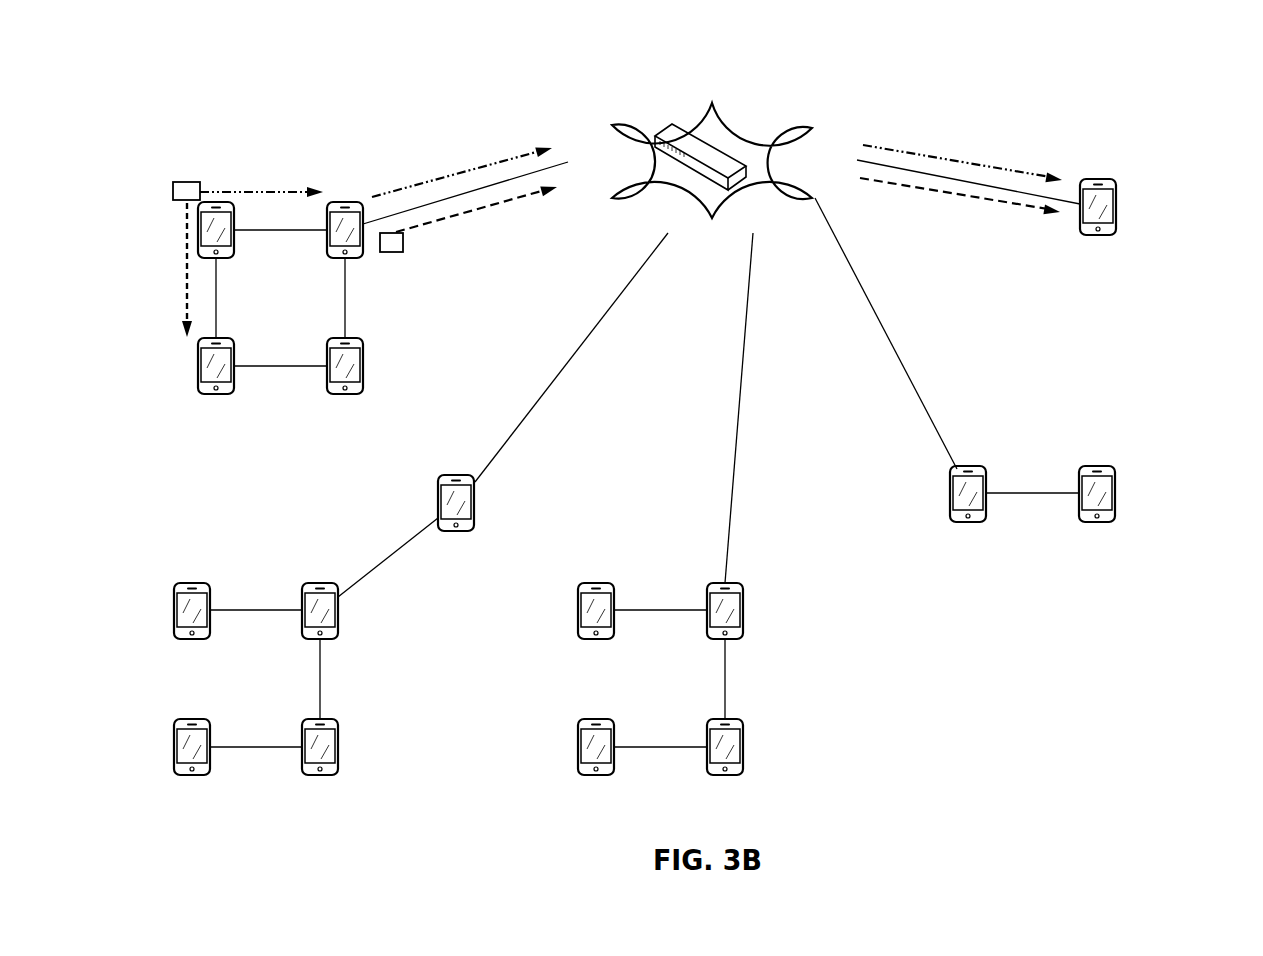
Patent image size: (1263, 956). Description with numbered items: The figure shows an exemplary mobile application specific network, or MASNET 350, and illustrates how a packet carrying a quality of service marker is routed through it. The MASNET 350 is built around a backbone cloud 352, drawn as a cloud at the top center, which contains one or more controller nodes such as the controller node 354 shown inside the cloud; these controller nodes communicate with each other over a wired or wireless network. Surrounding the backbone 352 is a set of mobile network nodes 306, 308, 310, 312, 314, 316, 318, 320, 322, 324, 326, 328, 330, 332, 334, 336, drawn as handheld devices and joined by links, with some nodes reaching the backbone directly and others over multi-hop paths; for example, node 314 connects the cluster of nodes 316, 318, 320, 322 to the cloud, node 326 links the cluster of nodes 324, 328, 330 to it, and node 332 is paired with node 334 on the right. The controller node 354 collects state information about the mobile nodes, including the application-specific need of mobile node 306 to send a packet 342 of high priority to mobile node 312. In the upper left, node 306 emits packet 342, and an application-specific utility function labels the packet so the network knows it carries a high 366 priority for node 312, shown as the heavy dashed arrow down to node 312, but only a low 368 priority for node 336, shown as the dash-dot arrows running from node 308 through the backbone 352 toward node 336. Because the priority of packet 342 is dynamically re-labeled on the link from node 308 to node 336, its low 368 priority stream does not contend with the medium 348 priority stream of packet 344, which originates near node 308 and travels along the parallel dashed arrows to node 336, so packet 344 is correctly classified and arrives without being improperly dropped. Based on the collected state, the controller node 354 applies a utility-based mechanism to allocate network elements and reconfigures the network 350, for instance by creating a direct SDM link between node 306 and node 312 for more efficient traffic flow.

The mobile node 306 is at (222, 258).
The mobile node 308 is at (350, 258).
The mobile node 310 is at (352, 394).
The mobile node 312 is at (222, 394).
The mobile node 314 is at (438, 493).
The mobile node 316 is at (198, 639).
The mobile node 318 is at (326, 639).
The mobile node 320 is at (326, 775).
The mobile node 322 is at (198, 775).
The mobile node 324 is at (602, 639).
The mobile node 326 is at (731, 639).
The mobile node 328 is at (731, 775).
The mobile node 330 is at (602, 775).
The mobile node 332 is at (974, 522).
The mobile node 334 is at (1103, 522).
The mobile node 336 is at (1105, 235).
The packet 342 is at (184, 182).
The packet 344 is at (403, 252).
The medium priority 348 is at (460, 212).
The mobile application specific network (MASNET) 350 is at (1174, 79).
The backbone cloud 352 is at (807, 118).
The controller node 354 is at (687, 168).
The high priority 366 is at (182, 296).
The low priority 368 is at (963, 138).